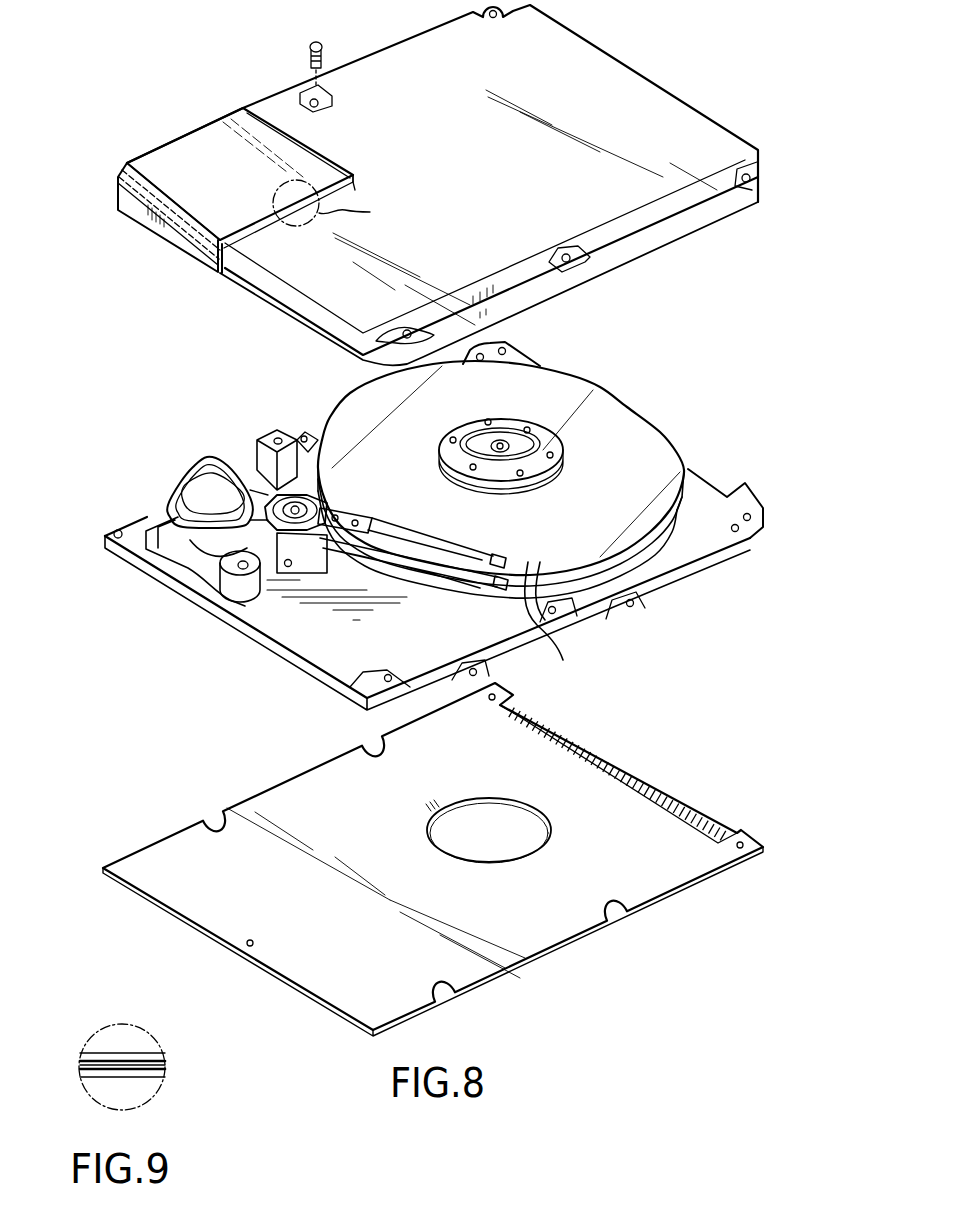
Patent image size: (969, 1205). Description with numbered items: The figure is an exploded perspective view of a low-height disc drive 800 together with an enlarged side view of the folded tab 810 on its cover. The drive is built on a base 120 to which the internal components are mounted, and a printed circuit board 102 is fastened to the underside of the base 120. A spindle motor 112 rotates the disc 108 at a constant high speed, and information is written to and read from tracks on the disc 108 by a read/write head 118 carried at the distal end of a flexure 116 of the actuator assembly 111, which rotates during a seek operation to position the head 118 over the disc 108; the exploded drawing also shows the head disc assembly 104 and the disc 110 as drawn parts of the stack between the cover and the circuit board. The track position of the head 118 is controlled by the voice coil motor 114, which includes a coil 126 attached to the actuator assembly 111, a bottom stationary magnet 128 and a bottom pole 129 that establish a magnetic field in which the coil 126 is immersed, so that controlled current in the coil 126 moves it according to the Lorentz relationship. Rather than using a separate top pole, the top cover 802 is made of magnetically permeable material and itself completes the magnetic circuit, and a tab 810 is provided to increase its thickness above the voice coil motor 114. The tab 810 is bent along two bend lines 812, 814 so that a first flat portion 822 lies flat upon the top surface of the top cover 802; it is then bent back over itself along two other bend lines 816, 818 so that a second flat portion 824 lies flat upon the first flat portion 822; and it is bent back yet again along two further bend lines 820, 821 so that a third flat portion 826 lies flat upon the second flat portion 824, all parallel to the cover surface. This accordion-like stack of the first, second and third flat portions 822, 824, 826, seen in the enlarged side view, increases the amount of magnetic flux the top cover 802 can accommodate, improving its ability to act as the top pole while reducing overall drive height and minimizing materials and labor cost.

In FIG. 8, the low-height disc drive 800 is at (391, 185).
In FIG. 8, the top cover 802 is at (513, 155).
In FIG. 8, the tab 810 is at (237, 154).
In FIG. 8, the bend line 812 is at (105, 202).
In FIG. 8, the bend line 814 is at (106, 180).
In FIG. 8, the bend line 816 is at (368, 190).
In FIG. 8, the bend line 818 is at (360, 172).
In FIG. 8, the bend line 820 is at (109, 160).
In FIG. 8, the bend line 821 is at (121, 152).
In FIG. 8, the head disk assembly 104 is at (434, 526).
In FIG. 8, the disc 108 is at (553, 625).
In FIG. 8, the disk 110 is at (558, 465).
In FIG. 8, the actuator assembly 111 is at (308, 562).
In FIG. 8, the spindle motor 112 is at (493, 448).
In FIG. 8, the voice coil motor 114 is at (324, 509).
In FIG. 8, the flexure 116 is at (378, 527).
In FIG. 8, the read/write head 118 is at (500, 560).
In FIG. 8, the base 120 is at (303, 667).
In FIG. 8, the coil 126 is at (248, 472).
In FIG. 8, the bottom stationary magnet 128 is at (208, 547).
In FIG. 8, the bottom pole 129 is at (153, 527).
In FIG. 8, the printed circuit board 102 is at (360, 963).
In FIG. 9, the first flat portion 822 is at (148, 1077).
In FIG. 9, the second flat portion 824 is at (160, 1065).
In FIG. 9, the third flat portion 826 is at (150, 1053).